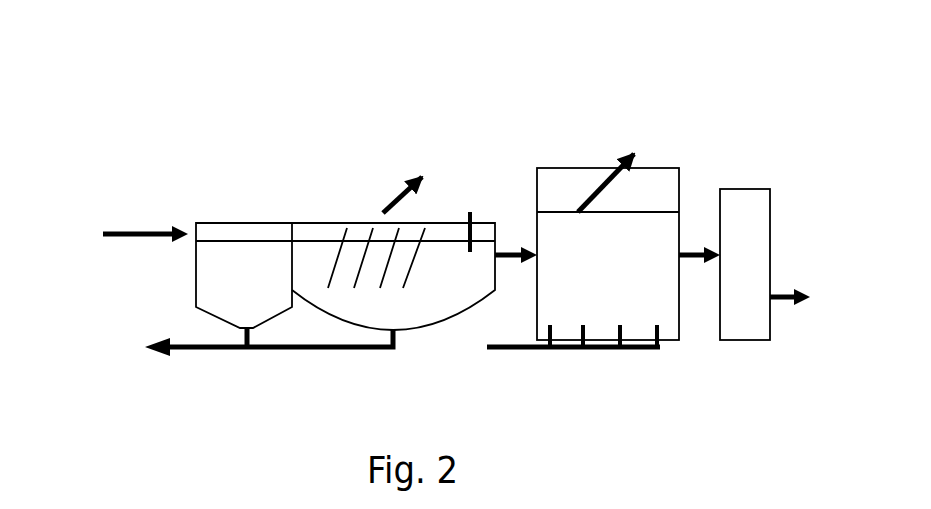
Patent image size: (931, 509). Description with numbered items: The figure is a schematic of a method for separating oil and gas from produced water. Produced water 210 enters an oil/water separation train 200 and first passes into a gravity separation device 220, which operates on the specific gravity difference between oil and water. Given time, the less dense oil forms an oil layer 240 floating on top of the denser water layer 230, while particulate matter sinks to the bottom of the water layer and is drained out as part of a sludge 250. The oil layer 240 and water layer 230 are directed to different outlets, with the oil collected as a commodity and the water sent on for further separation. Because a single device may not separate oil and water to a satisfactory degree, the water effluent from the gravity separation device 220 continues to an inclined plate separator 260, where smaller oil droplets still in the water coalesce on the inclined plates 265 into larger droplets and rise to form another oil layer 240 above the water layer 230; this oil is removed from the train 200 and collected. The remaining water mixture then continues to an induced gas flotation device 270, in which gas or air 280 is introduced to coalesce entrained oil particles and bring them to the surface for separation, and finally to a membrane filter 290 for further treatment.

The oil/water separation train 200 is at (132, 66).
The produced water 210 is at (118, 232).
The gravity separation device 220 is at (237, 222).
The water layer 230 is at (343, 309).
The oil layer 240 is at (313, 232).
The sludge 250 is at (172, 352).
The inclined plate separator 260 is at (338, 232).
The inclined plates 265 is at (408, 285).
The induced gas flotation device 270 is at (540, 168).
The air or gas inlet 280 is at (497, 352).
The membrane filter 290 is at (745, 342).